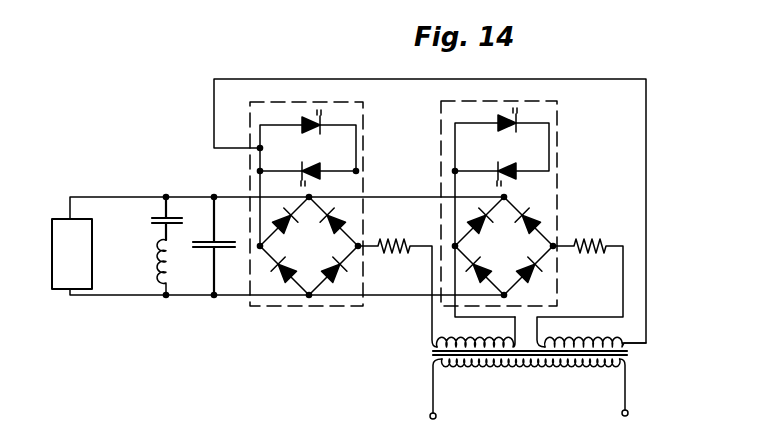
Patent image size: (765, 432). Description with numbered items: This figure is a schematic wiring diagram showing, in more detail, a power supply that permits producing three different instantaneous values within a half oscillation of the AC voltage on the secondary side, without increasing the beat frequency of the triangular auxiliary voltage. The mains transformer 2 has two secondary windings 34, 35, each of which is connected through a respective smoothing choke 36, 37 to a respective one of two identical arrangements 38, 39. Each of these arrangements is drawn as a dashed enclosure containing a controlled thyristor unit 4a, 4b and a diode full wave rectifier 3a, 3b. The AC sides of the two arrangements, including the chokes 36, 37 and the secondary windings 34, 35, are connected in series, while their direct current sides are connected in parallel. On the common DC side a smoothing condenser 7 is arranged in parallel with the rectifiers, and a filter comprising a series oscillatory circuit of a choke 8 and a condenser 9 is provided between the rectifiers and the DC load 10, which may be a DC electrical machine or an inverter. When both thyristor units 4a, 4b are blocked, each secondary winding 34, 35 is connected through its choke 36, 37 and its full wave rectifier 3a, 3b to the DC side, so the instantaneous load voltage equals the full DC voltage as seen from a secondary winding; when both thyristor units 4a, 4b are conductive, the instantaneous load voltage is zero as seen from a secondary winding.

The mains transformer 2 is at (533, 396).
The full wave rectifier 3a is at (318, 260).
The full wave rectifier 3b is at (511, 260).
The thyristor unit 4a is at (290, 162).
The thyristor unit 4b is at (485, 160).
The smoothing condenser 7 is at (222, 241).
The choke 8 is at (157, 263).
The condenser 9 is at (178, 212).
The DC load 10 is at (92, 237).
The secondary winding 34 is at (430, 345).
The secondary winding 35 is at (626, 347).
The smoothing choke 36 is at (393, 232).
The smoothing choke 37 is at (593, 228).
The arrangement 38 is at (312, 307).
The arrangement 39 is at (558, 113).